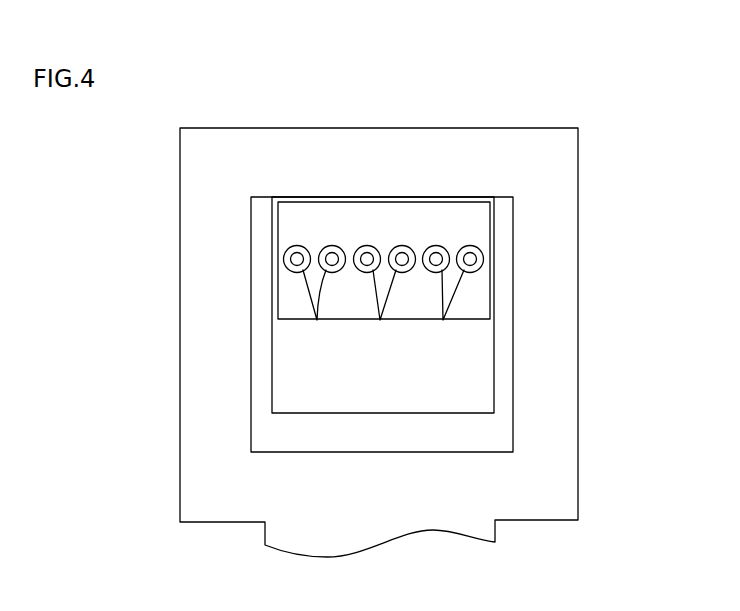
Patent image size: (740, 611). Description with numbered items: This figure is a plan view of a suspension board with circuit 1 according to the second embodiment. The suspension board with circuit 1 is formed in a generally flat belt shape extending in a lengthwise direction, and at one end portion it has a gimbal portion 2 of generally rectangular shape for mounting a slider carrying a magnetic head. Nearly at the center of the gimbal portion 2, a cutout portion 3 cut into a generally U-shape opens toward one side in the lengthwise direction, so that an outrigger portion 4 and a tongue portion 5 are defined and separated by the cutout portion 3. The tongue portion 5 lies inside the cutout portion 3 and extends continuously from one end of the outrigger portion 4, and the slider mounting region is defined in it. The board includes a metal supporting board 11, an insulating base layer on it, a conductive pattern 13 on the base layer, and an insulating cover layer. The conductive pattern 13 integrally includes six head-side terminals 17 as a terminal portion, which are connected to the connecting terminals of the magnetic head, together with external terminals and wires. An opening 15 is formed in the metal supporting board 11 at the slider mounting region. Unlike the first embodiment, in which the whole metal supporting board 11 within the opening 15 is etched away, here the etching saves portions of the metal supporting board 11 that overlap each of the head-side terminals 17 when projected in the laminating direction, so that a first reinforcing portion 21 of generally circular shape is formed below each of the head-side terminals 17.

The suspension board with circuit 1 is at (379, 363).
The gimbal portion 2 is at (566, 213).
The cutout portion 3 is at (504, 333).
The outrigger portion 4 is at (570, 283).
The tongue portion 5 is at (483, 392).
The metal supporting board 11 is at (540, 148).
The conductive pattern 13 is at (379, 326).
The opening 15 is at (397, 242).
The head-side terminals 17 is at (316, 320).
The first reinforcing portion 21 is at (367, 244).